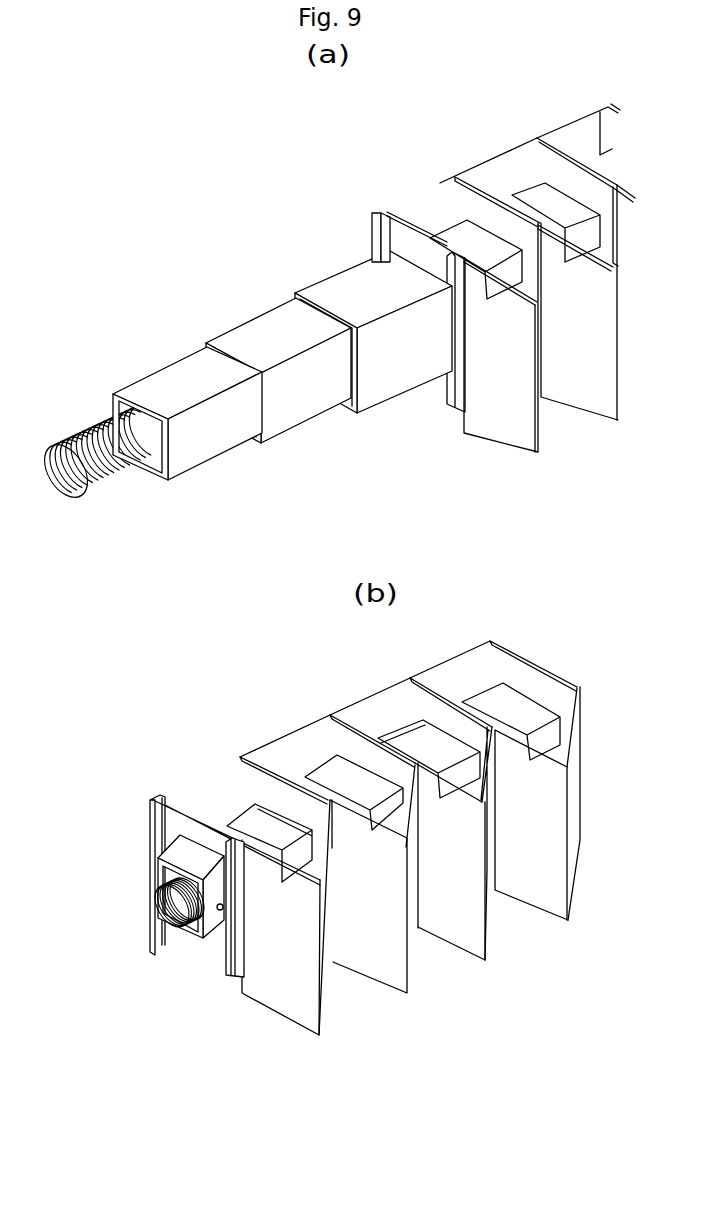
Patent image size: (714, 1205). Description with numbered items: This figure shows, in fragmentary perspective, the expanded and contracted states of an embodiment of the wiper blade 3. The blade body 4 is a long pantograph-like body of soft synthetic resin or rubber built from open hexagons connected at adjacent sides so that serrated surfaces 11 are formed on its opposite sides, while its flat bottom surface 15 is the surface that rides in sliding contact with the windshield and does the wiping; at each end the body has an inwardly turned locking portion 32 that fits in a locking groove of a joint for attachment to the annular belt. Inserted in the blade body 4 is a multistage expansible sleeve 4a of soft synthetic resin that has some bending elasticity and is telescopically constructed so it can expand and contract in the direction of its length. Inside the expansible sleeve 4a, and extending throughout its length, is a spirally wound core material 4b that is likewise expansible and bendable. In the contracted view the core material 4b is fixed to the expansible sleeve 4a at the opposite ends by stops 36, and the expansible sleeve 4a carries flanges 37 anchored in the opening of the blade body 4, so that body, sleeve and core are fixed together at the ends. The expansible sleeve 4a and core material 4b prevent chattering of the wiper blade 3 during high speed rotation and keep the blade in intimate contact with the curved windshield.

The wiper blade 3 is at (502, 160).
The blade body 4 is at (500, 420).
The expansible sleeve 4a is at (393, 380).
The core material 4b is at (107, 465).
The serrated surfaces 11 is at (618, 362).
The flat bottom surface 15 is at (578, 408).
The inwardly turned locking portion 32 is at (375, 240).
The stops 36 is at (221, 913).
The flanges 37 is at (200, 852).